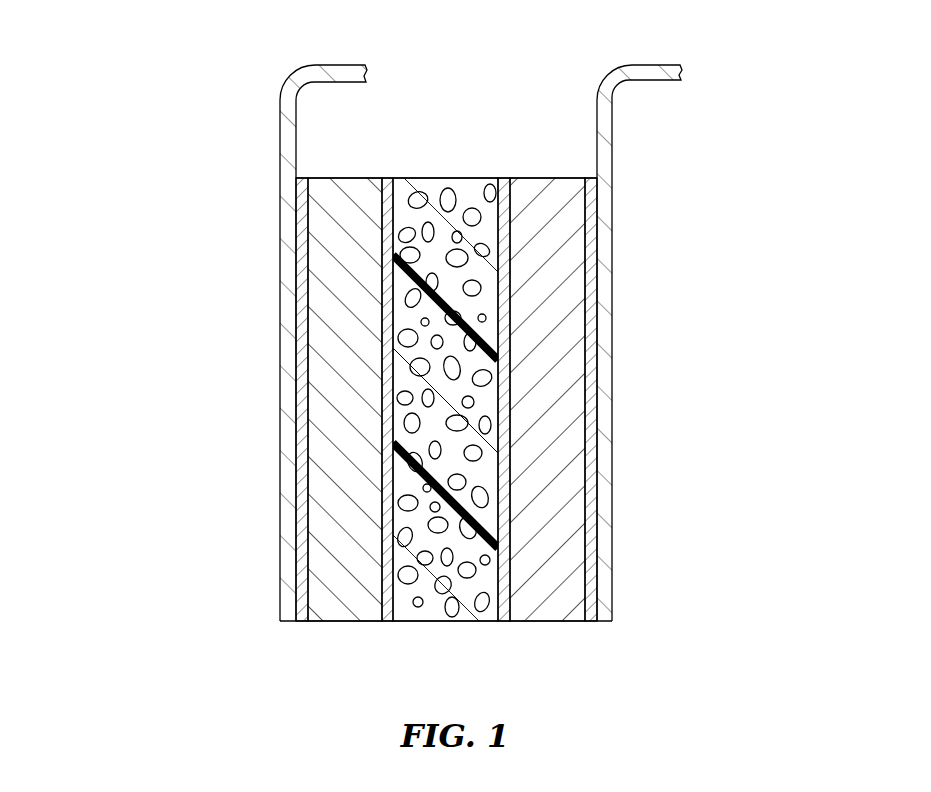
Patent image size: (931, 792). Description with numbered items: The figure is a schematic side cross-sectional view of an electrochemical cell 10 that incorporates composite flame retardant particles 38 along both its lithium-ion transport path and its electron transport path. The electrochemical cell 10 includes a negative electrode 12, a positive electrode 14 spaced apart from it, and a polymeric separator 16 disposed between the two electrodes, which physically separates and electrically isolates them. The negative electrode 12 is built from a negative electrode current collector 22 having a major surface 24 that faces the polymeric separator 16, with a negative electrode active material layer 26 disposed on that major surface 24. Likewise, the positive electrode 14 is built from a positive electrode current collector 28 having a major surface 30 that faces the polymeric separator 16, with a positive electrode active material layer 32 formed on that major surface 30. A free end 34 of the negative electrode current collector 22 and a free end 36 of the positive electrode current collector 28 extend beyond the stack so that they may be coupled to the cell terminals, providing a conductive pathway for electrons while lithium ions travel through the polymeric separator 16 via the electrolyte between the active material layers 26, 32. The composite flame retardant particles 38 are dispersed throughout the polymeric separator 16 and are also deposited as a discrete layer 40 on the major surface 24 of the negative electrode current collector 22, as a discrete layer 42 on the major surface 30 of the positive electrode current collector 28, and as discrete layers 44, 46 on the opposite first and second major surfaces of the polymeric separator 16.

The electrochemical cell 10 is at (175, 95).
The negative electrode 12 is at (280, 630).
The positive electrode 14 is at (515, 630).
The polymeric separator 16 is at (475, 178).
The negative electrode current collector 22 is at (278, 327).
The major surface 24 is at (296, 362).
The negative electrode active material layer 26 is at (332, 178).
The positive electrode current collector 28 is at (657, 312).
The major surface 30 is at (597, 362).
The positive electrode active material layer 32 is at (542, 178).
The free end 34 is at (288, 82).
The free end 36 is at (658, 64).
The composite flame retardant particles 38 is at (447, 182).
The discrete layer 40 is at (302, 178).
The discrete layer 42 is at (592, 178).
The discrete layer 44 is at (387, 178).
The discrete layer 46 is at (507, 178).